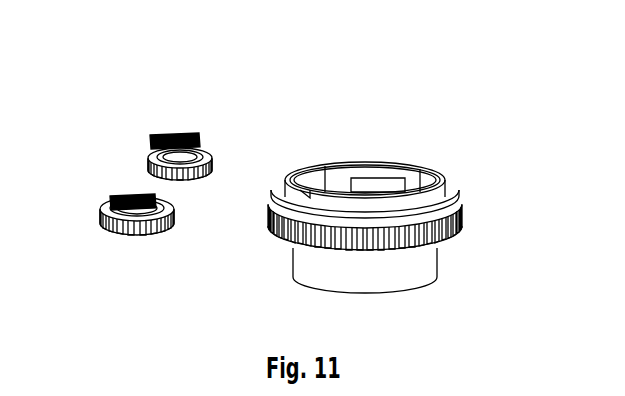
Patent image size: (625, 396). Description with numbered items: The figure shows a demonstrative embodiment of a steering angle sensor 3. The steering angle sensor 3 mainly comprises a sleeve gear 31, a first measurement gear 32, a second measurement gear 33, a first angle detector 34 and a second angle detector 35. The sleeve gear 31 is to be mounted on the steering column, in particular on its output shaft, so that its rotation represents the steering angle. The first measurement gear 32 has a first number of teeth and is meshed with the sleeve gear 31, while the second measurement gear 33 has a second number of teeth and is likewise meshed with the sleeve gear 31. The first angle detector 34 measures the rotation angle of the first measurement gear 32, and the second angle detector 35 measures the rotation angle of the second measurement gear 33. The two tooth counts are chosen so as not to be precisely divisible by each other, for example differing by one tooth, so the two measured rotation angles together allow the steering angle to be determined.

The steering angle sensor 3 is at (160, 98).
The sleeve gear 31 is at (457, 197).
The first measurement gear 32 is at (210, 152).
The second measurement gear 33 is at (153, 238).
The first angle detector 34 is at (150, 137).
The second angle detector 35 is at (120, 197).